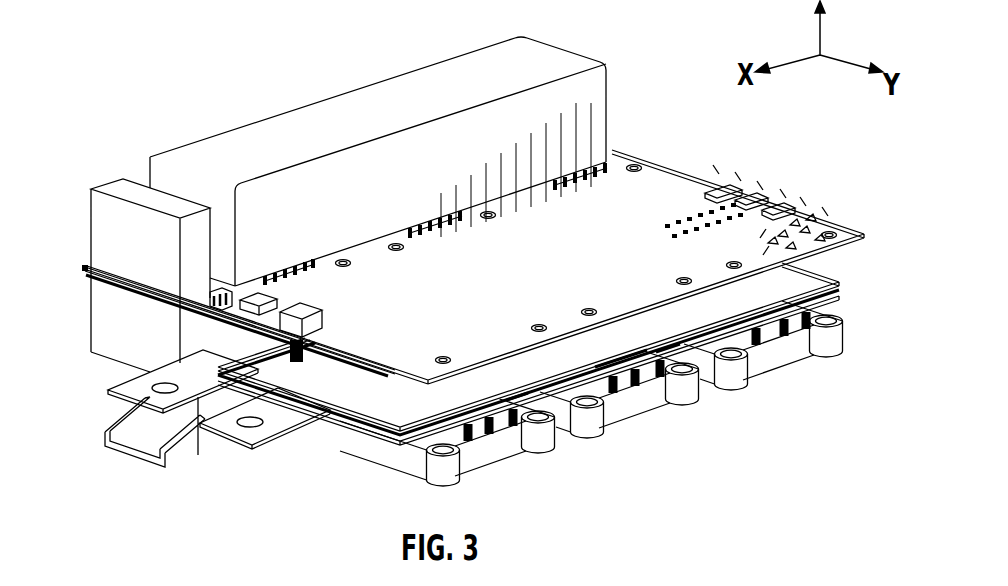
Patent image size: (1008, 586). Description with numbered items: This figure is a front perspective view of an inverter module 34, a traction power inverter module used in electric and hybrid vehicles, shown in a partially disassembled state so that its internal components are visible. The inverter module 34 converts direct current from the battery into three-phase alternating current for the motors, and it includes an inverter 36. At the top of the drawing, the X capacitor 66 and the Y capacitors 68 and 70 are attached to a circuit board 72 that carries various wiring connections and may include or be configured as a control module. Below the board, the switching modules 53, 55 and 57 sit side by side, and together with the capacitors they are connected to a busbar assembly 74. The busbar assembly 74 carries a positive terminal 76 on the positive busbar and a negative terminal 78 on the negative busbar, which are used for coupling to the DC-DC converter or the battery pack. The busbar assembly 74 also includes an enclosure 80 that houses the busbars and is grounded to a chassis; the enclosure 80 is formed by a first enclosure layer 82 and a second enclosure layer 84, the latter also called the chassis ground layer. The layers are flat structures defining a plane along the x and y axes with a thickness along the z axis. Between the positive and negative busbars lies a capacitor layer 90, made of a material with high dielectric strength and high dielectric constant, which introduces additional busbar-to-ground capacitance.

The inverter module 34 is at (135, 38).
The inverter 36 is at (856, 318).
The switching module 53 is at (513, 455).
The switching module 55 is at (650, 418).
The switching module 57 is at (786, 368).
The X capacitor 66 is at (333, 94).
The Y capacitor 68 is at (105, 182).
The Y capacitor 70 is at (83, 302).
The circuit board 72 is at (666, 183).
The busbar assembly 74 is at (848, 277).
The positive terminal 76 is at (240, 445).
The negative terminal 78 is at (125, 389).
The enclosure 80 is at (401, 406).
The first enclosure layer 82 is at (383, 437).
The second enclosure layer 84 is at (566, 437).
The capacitor layer 90 is at (472, 445).